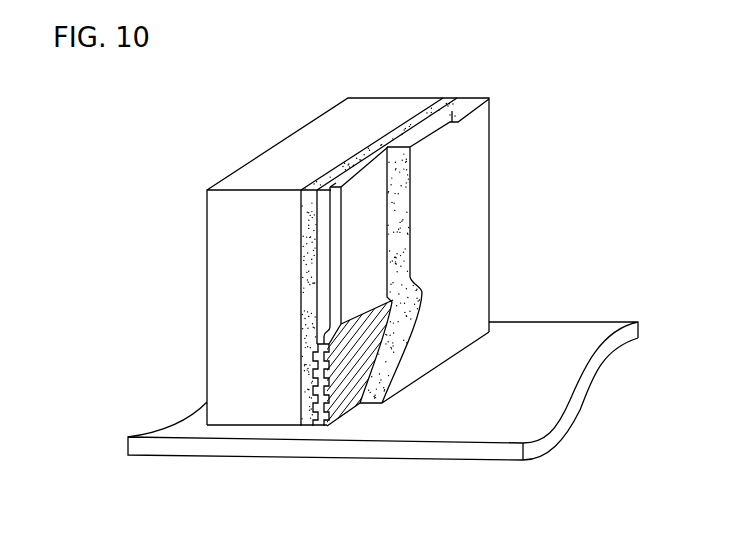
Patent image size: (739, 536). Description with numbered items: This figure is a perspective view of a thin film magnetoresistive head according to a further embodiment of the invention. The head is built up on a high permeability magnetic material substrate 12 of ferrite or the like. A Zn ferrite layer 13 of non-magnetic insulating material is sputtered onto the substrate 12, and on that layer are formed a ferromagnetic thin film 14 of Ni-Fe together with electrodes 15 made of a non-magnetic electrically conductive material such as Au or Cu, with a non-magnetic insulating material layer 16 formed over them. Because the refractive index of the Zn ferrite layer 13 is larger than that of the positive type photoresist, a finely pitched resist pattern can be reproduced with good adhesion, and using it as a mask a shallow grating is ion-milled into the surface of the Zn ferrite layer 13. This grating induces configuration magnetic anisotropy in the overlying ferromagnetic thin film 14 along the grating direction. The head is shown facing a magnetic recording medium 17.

The high permeability magnetic material substrate 12 is at (217, 426).
The Zn ferrite layer 13 is at (305, 428).
The ferromagnetic thin film 14 is at (323, 428).
The electrodes 15 is at (322, 277).
The non-magnetic insulating material layer 16 is at (377, 410).
The magnetic recording medium 17 is at (498, 462).